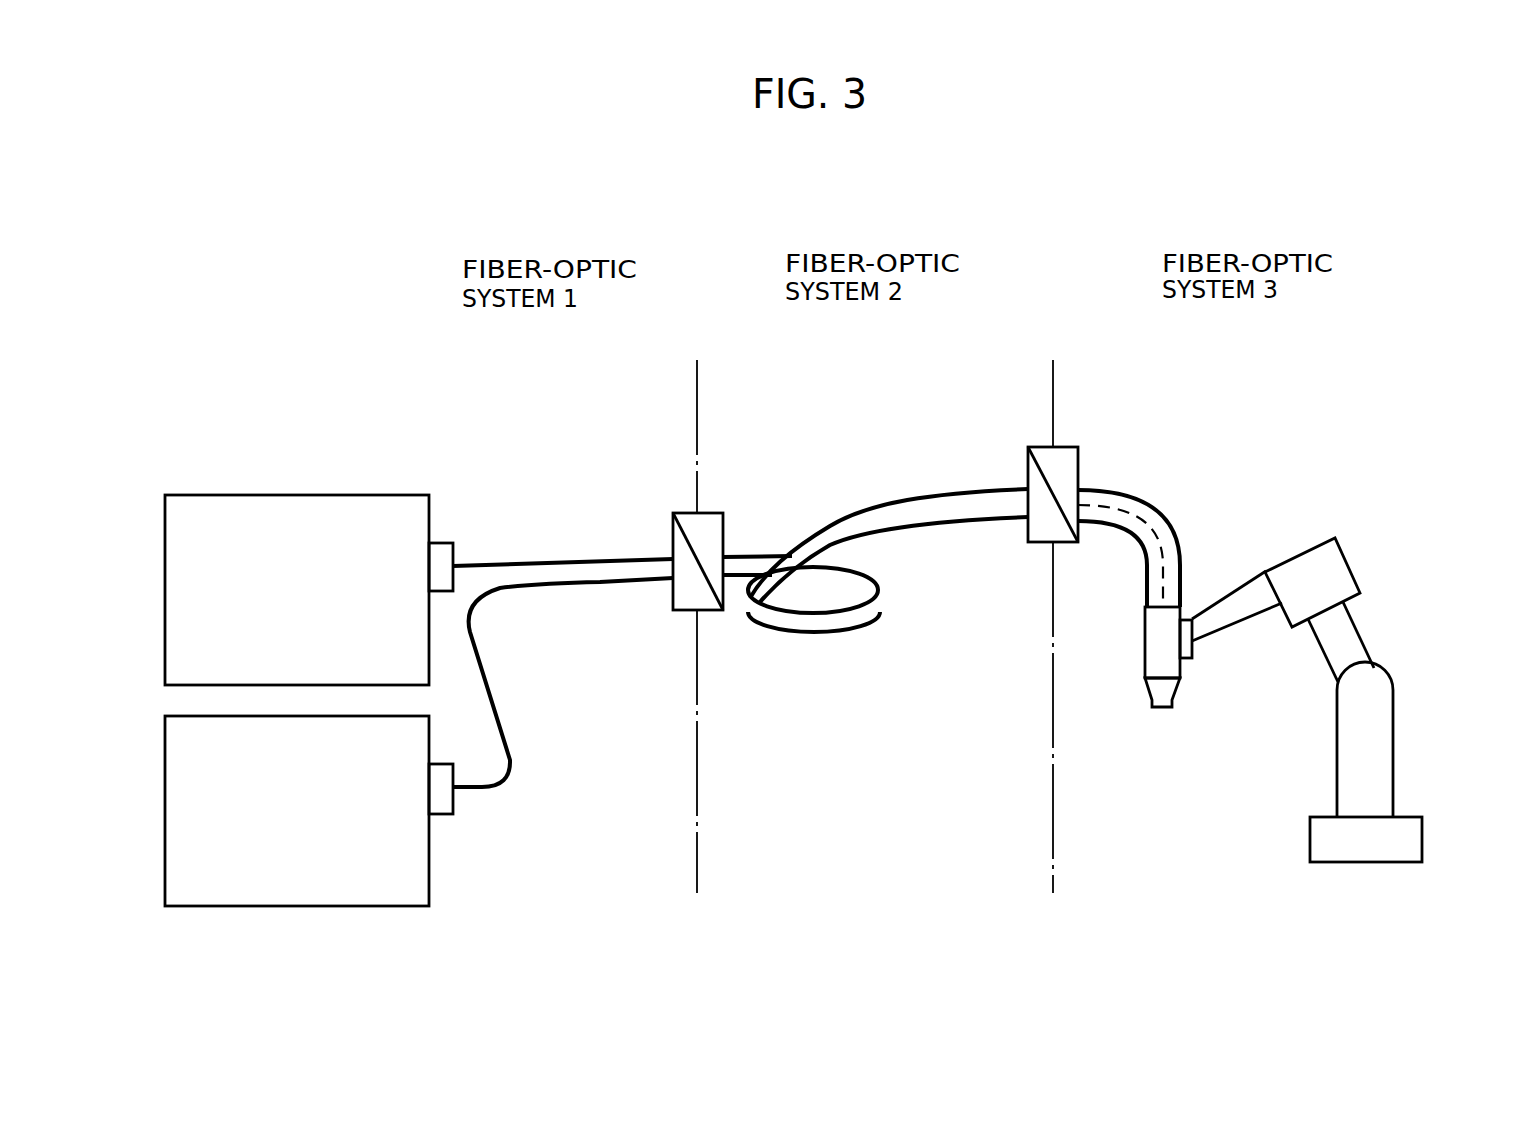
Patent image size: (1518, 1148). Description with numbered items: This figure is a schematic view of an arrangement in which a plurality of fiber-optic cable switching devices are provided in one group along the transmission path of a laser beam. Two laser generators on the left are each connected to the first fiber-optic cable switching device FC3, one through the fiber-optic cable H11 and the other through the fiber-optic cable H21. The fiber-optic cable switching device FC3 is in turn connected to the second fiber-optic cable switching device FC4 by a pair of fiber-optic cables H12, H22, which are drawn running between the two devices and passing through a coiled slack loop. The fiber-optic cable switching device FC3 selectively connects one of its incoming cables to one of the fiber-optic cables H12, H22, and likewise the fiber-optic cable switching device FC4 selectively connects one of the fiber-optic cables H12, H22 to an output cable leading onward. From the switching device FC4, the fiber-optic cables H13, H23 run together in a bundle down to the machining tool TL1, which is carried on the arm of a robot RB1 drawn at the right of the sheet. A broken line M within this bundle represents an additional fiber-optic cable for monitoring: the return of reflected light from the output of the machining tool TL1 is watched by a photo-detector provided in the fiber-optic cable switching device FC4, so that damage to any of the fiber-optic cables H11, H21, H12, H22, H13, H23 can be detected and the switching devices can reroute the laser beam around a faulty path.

The fiber-optic cable H11 is at (528, 560).
The fiber-optic cable H21 is at (488, 791).
The fiber-optic cable switching device FC3 is at (723, 512).
The fiber-optic cable H12 is at (905, 498).
The fiber-optic cable H22 is at (940, 528).
The fiber-optic cable switching device FC4 is at (1078, 463).
The fiber-optic cable H13 is at (1160, 509).
The fiber-optic cable H23 is at (1108, 527).
The fiber-optic cable for monitoring M is at (1163, 547).
The machining tool TL1 is at (1176, 695).
The robot RB1 is at (1393, 738).